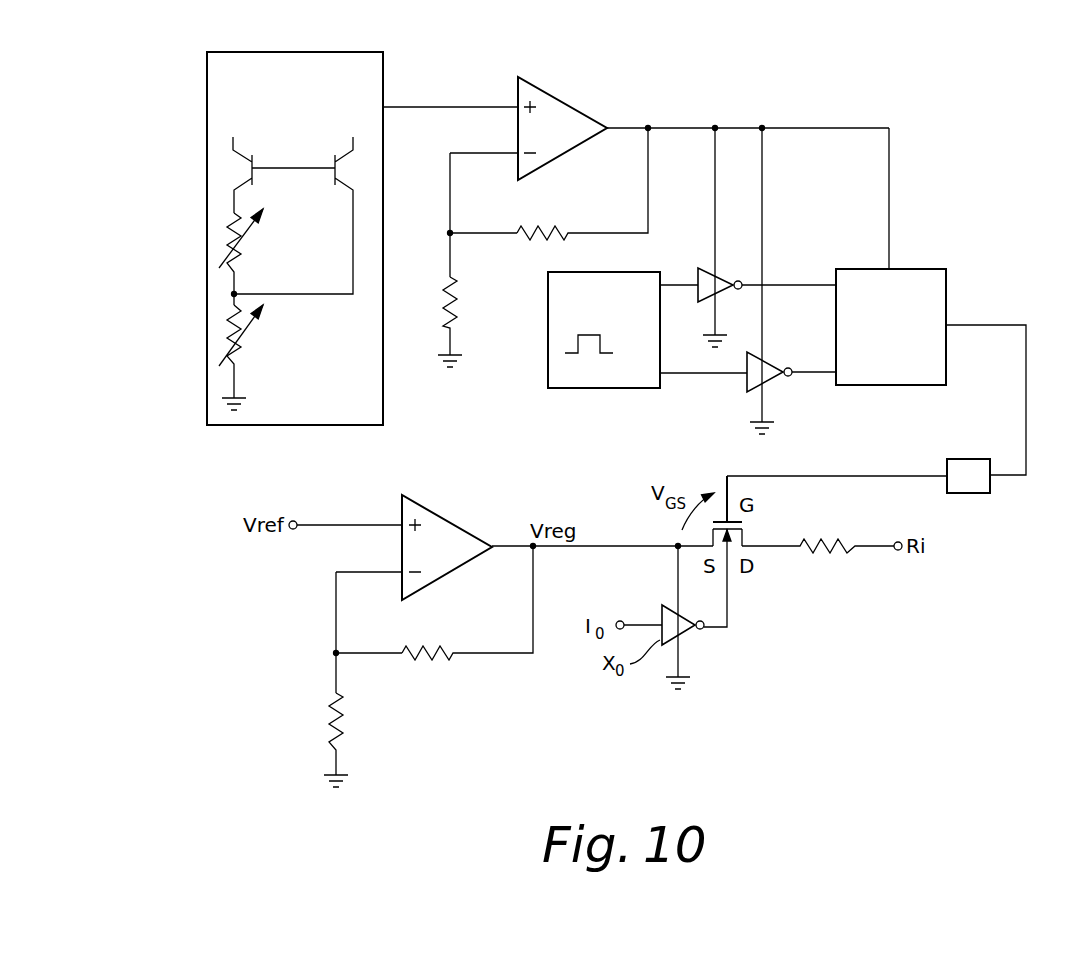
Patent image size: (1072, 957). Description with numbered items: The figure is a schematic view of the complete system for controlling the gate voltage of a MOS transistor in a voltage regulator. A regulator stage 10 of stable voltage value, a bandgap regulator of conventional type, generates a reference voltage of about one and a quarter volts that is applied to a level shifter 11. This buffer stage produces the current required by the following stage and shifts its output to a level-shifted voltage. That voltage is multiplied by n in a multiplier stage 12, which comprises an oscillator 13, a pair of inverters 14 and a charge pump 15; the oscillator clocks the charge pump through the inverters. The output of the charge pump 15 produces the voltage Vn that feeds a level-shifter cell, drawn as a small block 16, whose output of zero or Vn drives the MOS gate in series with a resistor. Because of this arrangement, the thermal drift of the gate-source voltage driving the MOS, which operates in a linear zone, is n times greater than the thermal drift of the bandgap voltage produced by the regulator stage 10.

The regulator stage 10 is at (206, 64).
The level shifter 11 is at (516, 87).
The multiplier stage 12 is at (940, 203).
The oscillator 13 is at (548, 375).
The pair of inverters 14 is at (698, 270).
The charge pump 15 is at (946, 282).
The level shifting element 16 is at (990, 487).